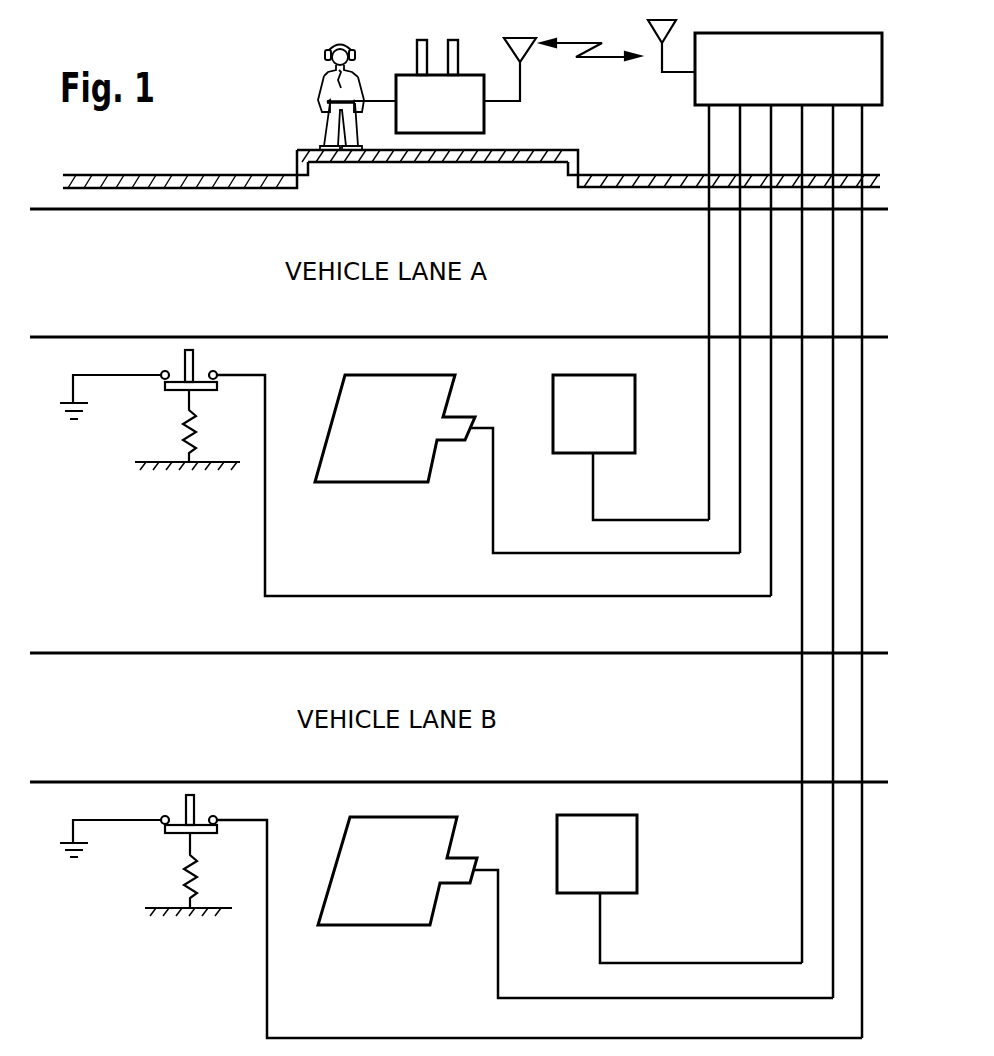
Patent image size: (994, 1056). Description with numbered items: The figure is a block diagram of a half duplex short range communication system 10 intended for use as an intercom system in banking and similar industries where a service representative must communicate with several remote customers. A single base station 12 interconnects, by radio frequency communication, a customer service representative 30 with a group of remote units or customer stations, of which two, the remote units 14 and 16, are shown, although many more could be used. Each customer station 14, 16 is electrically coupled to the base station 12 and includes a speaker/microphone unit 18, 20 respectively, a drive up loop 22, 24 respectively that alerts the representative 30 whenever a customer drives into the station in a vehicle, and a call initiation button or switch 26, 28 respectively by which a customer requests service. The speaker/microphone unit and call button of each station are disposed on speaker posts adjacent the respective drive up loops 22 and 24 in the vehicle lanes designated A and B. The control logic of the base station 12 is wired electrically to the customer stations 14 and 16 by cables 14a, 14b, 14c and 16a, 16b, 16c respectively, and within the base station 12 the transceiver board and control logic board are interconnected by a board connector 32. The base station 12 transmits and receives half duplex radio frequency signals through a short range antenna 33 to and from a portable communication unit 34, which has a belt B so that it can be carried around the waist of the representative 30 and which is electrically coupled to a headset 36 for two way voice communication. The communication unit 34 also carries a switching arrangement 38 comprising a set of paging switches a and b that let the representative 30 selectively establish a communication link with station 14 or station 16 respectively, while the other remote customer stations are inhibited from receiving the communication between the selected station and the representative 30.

The half duplex short range communication system 10 is at (172, 947).
The base station 12 is at (818, 40).
The remote unit 14 is at (878, 430).
The cable 14a is at (658, 520).
The cable 14b is at (463, 595).
The cable 14c is at (543, 550).
The remote unit 16 is at (881, 868).
The cable 16a is at (600, 925).
The cable 16b is at (388, 1038).
The cable 16c is at (497, 973).
The speaker/microphone unit 18 is at (635, 432).
The speaker/microphone unit 20 is at (630, 870).
The drive up loop 22 is at (343, 482).
The drive up loop 24 is at (378, 925).
The call initiation button 26 is at (185, 362).
The call initiation button 28 is at (197, 805).
The customer service representative 30 is at (294, 88).
The board connector 32 is at (535, 38).
The short range antenna 33 is at (668, 20).
The portable communication unit 34 is at (477, 118).
The headset 36 is at (333, 50).
The switching arrangement 38 is at (438, 44).
The paging switch a is at (417, 53).
The paging switch b is at (457, 53).
The belt B is at (322, 97).